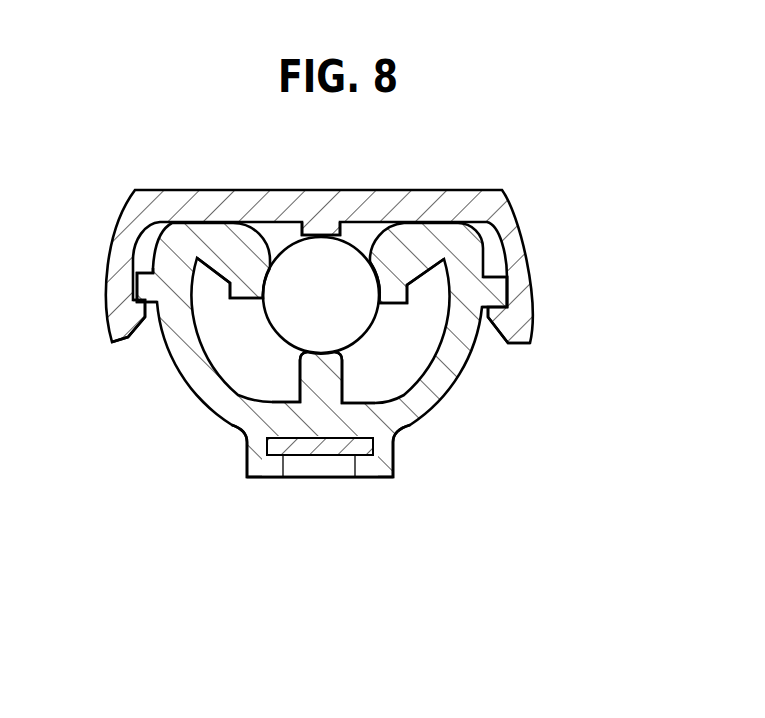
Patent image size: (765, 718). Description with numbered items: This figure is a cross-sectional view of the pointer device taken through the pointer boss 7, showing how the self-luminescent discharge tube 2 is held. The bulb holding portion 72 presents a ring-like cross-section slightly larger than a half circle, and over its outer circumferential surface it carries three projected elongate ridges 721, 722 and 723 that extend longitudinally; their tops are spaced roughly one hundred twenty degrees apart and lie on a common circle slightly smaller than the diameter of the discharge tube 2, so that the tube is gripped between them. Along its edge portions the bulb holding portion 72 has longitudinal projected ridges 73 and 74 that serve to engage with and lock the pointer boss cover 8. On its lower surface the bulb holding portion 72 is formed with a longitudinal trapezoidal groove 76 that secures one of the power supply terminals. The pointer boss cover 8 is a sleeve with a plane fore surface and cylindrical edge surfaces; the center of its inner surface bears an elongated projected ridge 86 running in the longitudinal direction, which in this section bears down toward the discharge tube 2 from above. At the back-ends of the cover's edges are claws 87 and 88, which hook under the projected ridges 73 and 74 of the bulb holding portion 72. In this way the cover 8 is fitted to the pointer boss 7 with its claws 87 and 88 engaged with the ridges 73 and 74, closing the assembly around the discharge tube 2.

The discharge tube 2 is at (375, 331).
The pointer boss 7 is at (205, 386).
The pointer boss cover 8 is at (513, 203).
The bulb holding portion 72 is at (413, 403).
The projected ridge 73 is at (147, 287).
The projected ridge 74 is at (493, 293).
The trapezoidal groove 76 is at (326, 437).
The elongated projected ridge 86 is at (329, 222).
The claw 87 is at (513, 334).
The claw 88 is at (128, 333).
The projected elongate ridge 721 is at (243, 278).
The projected elongate ridge 722 is at (405, 272).
The projected elongate ridge 723 is at (310, 370).